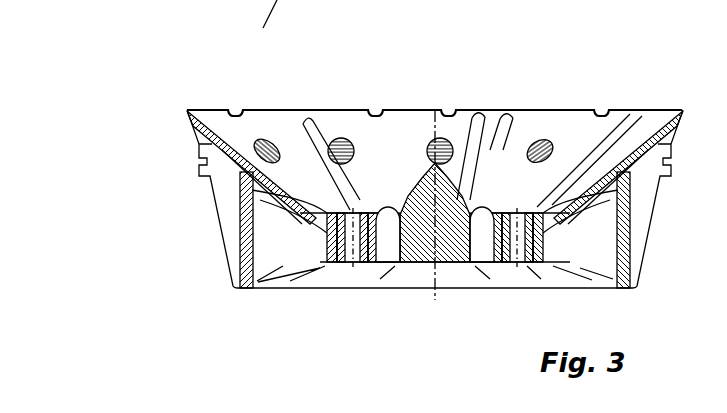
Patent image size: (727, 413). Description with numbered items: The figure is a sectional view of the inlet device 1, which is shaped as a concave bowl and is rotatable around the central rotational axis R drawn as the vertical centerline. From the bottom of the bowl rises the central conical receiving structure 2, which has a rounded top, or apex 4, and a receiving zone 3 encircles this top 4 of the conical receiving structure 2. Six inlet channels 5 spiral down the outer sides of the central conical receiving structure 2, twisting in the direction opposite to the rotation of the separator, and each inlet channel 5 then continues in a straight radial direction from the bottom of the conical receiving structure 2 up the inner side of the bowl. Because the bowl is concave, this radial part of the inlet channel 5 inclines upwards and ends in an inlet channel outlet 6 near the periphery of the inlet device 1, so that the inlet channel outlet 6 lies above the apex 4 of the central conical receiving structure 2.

The inlet device 1 is at (142, 68).
The central conical receiving structure 2 is at (477, 198).
The receiving zone 3 is at (428, 167).
The apex 4 is at (443, 138).
The inlet channel 5 is at (503, 108).
The inlet channel outlet 6 is at (293, 110).
The central rotational axis R is at (435, 110).